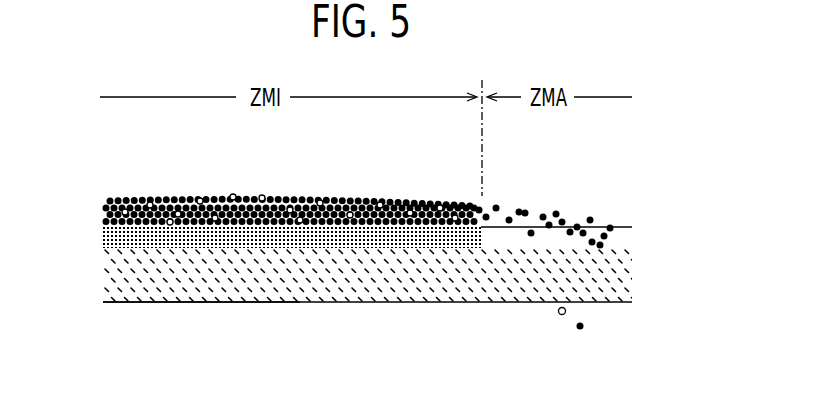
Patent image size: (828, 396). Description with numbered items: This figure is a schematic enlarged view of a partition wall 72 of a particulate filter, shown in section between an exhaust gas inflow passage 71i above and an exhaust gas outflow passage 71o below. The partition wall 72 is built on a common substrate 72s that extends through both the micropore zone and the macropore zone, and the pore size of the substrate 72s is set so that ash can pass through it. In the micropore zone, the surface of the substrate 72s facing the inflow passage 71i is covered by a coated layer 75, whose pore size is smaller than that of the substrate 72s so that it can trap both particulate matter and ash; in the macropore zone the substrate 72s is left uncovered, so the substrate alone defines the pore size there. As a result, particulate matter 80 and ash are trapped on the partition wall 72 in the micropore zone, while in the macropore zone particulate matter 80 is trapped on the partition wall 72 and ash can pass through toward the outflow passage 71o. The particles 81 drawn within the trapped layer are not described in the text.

The partition wall 72 is at (632, 266).
The substrate 72s is at (103, 297).
The coated layer 75 is at (103, 238).
The particulate matter 80 is at (234, 195).
The first particles 81 is at (196, 195).
The exhaust gas inflow passage 71i is at (620, 180).
The exhaust gas outflow passage 71o is at (604, 372).